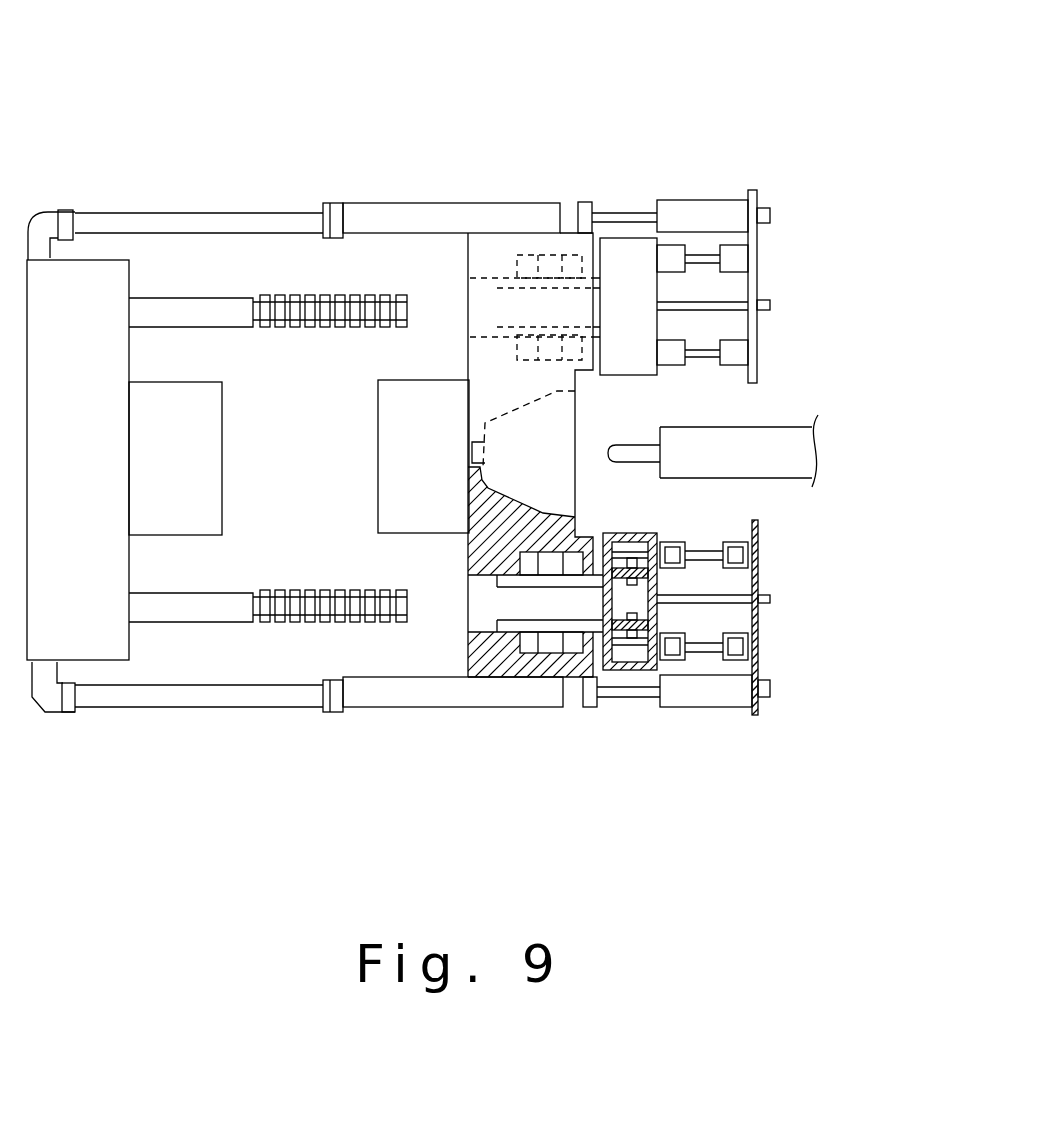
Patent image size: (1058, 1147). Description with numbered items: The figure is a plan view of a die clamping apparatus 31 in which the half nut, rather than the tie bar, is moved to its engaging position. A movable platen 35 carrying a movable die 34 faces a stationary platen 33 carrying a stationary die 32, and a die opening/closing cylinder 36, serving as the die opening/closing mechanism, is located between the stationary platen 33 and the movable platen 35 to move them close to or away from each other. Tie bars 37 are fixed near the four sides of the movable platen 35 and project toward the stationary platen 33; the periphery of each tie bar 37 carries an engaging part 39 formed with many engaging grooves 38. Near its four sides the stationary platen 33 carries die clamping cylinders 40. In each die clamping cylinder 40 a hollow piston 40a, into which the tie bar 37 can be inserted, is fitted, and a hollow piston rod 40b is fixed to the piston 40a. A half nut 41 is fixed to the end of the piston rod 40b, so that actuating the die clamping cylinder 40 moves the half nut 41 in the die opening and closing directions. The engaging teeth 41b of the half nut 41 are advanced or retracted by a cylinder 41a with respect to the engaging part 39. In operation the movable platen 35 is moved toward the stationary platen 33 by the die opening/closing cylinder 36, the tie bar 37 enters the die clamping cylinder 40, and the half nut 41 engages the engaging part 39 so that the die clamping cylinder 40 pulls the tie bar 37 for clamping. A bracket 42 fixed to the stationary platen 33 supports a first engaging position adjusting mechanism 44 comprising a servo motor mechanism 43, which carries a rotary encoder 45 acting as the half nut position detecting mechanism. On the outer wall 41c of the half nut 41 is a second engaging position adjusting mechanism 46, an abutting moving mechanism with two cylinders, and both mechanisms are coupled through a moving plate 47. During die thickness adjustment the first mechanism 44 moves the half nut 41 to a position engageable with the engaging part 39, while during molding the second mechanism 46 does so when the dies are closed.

The die clamping apparatus 31 is at (580, 133).
The stationary die 32 is at (400, 467).
The stationary platen 33 is at (550, 370).
The movable die 34 is at (203, 474).
The movable platen 35 is at (55, 474).
The die opening/closing cylinder 36 is at (432, 217).
The tie bar 37 is at (211, 281).
The engaging groove 38 is at (290, 296).
The engaging part 39 is at (372, 280).
The die clamping cylinder 40 is at (534, 236).
The hollow piston 40a is at (550, 645).
The hollow piston rod 40b is at (575, 623).
The half nut 41 is at (676, 292).
The cylinder 41a is at (620, 648).
The engaging teeth 41b is at (625, 622).
The outer wall 41c is at (652, 660).
The bracket 42 is at (585, 200).
The servo motor mechanism 43 is at (698, 203).
The first engaging position adjusting mechanism 44 is at (686, 157).
The rotary encoder 45 is at (768, 205).
The second engaging position adjusting mechanism 46 is at (716, 341).
The moving plate 47 is at (745, 240).